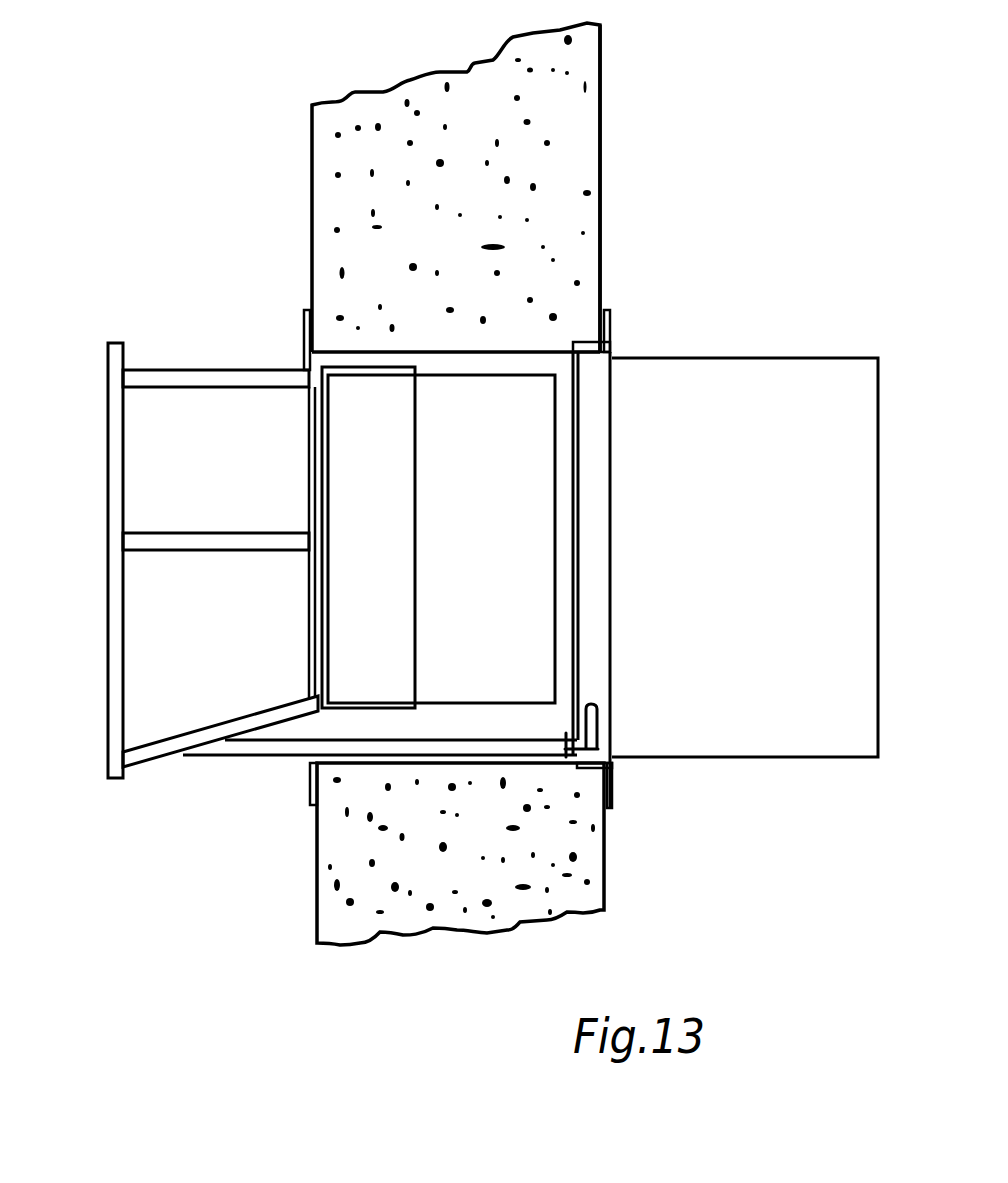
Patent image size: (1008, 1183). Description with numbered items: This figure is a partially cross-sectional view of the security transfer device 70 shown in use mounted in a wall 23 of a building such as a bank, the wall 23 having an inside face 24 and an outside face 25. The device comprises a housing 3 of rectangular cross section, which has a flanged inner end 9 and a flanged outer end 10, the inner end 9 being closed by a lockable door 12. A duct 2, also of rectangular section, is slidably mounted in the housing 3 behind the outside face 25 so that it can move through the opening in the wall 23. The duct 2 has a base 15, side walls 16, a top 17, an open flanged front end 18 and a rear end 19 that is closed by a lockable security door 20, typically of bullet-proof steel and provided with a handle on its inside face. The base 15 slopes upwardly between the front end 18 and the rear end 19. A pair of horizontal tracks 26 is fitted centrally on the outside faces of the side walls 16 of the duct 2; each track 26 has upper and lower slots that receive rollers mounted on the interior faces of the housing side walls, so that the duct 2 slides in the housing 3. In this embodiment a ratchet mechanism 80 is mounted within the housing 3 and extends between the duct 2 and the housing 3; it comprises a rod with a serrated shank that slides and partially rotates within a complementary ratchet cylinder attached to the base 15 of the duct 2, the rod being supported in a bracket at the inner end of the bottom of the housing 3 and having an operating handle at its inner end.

The duct 2 is at (155, 712).
The housing 3 is at (531, 348).
The flanged inner end 9 is at (612, 333).
The flanged outer end 10 is at (310, 783).
The lockable door 12 is at (757, 598).
The base 15 is at (168, 762).
The side walls 16 is at (157, 652).
The top 17 is at (188, 378).
The open flanged front end 18 is at (107, 413).
The rear end 19 is at (360, 707).
The security door 20 is at (497, 598).
The wall 23 is at (590, 103).
The inside face 24 is at (603, 162).
The outside face 25 is at (323, 185).
The horizontal tracks 26 is at (252, 542).
The security transfer device 70 is at (704, 259).
The ratchet mechanism 80 is at (558, 716).